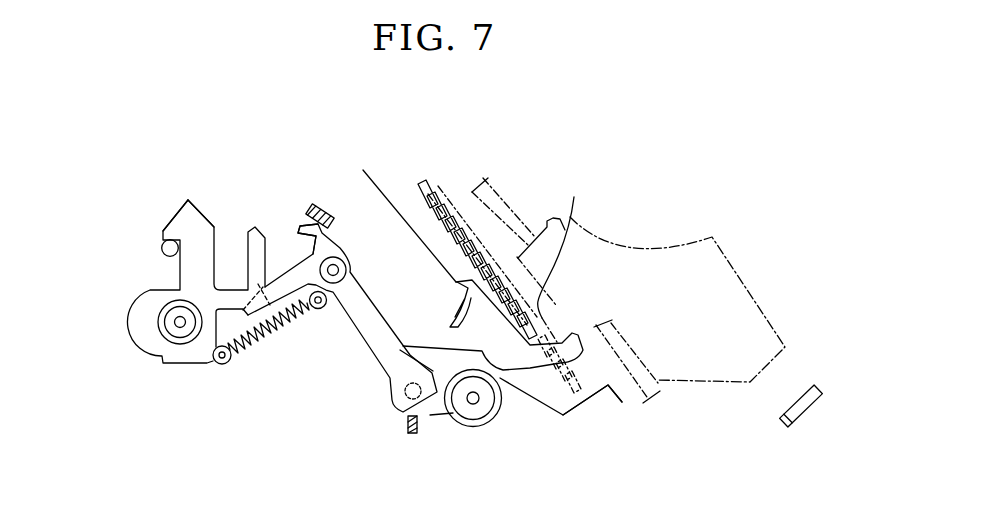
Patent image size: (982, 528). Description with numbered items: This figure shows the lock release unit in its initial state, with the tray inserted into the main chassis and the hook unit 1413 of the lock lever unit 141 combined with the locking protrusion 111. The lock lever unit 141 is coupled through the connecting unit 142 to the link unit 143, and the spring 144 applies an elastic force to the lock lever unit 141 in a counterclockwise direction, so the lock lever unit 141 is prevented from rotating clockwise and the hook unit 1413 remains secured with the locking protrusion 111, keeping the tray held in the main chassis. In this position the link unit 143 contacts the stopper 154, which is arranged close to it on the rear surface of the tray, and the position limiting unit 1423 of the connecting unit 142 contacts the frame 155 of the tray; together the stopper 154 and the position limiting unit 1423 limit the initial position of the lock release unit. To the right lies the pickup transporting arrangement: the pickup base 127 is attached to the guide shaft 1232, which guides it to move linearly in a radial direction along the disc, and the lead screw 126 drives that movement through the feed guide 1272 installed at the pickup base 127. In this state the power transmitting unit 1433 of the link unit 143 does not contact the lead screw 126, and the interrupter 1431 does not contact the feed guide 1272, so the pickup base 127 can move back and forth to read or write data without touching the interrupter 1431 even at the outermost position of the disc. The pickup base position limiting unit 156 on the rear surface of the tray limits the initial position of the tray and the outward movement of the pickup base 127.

The locking protrusion 111 is at (162, 247).
The lead screw 126 is at (433, 180).
The pickup base 127 is at (627, 258).
The lock lever unit 141 is at (147, 350).
The connecting unit 142 is at (354, 342).
The link unit 143 is at (487, 426).
The spring 144 is at (278, 338).
The stopper 154 is at (414, 434).
The frame 155 is at (316, 208).
The pickup base position limiting unit 156 is at (782, 417).
The guide shaft 1232 is at (500, 200).
The feed guide 1272 is at (557, 261).
The hook unit 1413 is at (187, 212).
The position limiting unit 1423 is at (298, 232).
The interrupter 1431 is at (600, 420).
The power transmitting unit 1433 is at (441, 310).